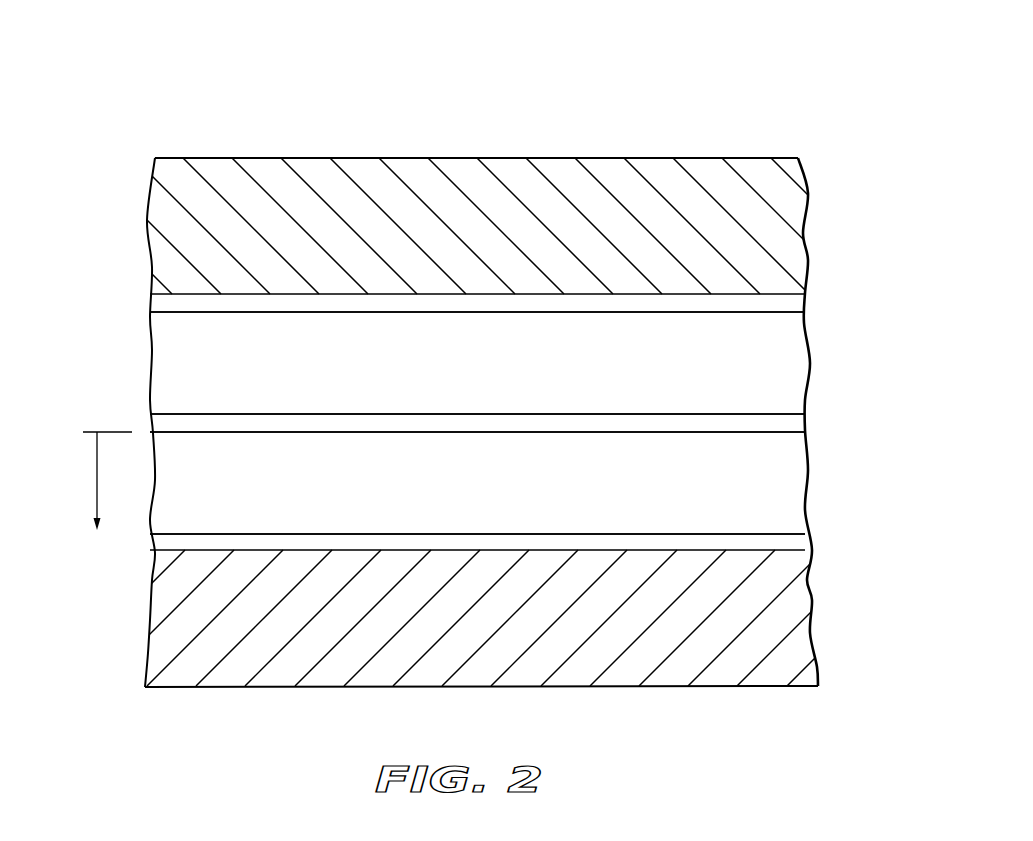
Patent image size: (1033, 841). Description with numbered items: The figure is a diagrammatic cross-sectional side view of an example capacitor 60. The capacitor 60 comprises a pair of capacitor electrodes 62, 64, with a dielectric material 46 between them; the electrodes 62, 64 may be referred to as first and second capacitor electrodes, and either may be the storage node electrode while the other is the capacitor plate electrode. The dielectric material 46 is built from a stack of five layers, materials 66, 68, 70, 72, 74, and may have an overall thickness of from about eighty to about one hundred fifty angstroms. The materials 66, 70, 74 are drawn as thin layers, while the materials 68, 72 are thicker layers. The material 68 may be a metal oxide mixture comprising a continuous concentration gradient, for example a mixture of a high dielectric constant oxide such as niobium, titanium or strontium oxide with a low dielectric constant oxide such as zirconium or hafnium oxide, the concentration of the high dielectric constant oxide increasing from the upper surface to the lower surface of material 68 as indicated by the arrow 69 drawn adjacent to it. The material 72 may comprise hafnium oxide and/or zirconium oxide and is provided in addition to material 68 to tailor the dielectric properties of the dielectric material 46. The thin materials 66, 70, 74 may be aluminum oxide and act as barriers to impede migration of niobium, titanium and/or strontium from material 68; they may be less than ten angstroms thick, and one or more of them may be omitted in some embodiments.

The capacitor 60 is at (486, 368).
The capacitor electrode 62 is at (618, 622).
The capacitor electrode 64 is at (616, 224).
The dielectric material 46 is at (479, 422).
The material 66 is at (203, 543).
The material 68 is at (233, 490).
The material 70 is at (180, 420).
The material 72 is at (232, 373).
The material 74 is at (180, 303).
The arrow 69 is at (97, 475).